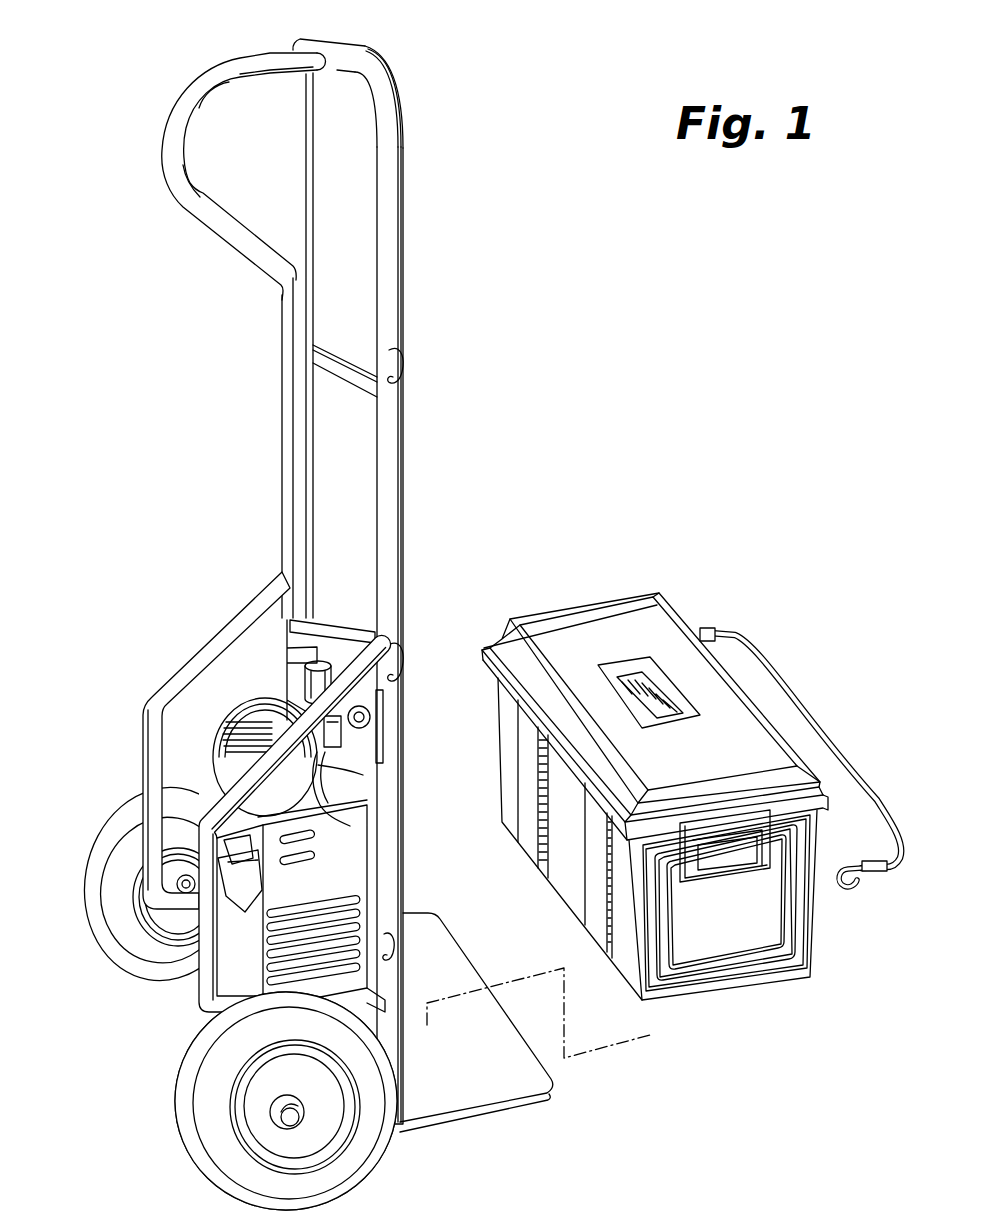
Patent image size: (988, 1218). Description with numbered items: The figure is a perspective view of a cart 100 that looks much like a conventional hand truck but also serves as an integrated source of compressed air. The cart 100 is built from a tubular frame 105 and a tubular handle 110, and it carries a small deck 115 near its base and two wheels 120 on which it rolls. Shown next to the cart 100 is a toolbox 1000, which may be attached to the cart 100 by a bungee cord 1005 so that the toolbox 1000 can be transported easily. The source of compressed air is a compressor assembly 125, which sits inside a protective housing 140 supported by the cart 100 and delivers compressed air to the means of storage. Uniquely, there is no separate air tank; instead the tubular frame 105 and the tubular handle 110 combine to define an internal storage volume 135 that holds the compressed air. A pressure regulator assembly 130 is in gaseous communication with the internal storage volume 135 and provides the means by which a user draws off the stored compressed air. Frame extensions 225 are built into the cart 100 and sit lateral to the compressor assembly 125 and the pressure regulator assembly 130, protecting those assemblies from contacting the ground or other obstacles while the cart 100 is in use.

The cart 100 is at (578, 410).
The tubular frame 105 is at (371, 570).
The tubular handle 110 is at (167, 116).
The small deck 115 is at (448, 970).
The wheels 120 is at (95, 880).
The compressor assembly 125 is at (350, 878).
The pressure regulator assembly 130 is at (273, 652).
The internal storage volume 135 is at (388, 127).
The protective housing 140 is at (352, 827).
The frame extensions 225 is at (148, 760).
The toolbox 1000 is at (728, 995).
The bungee cord 1005 is at (837, 731).